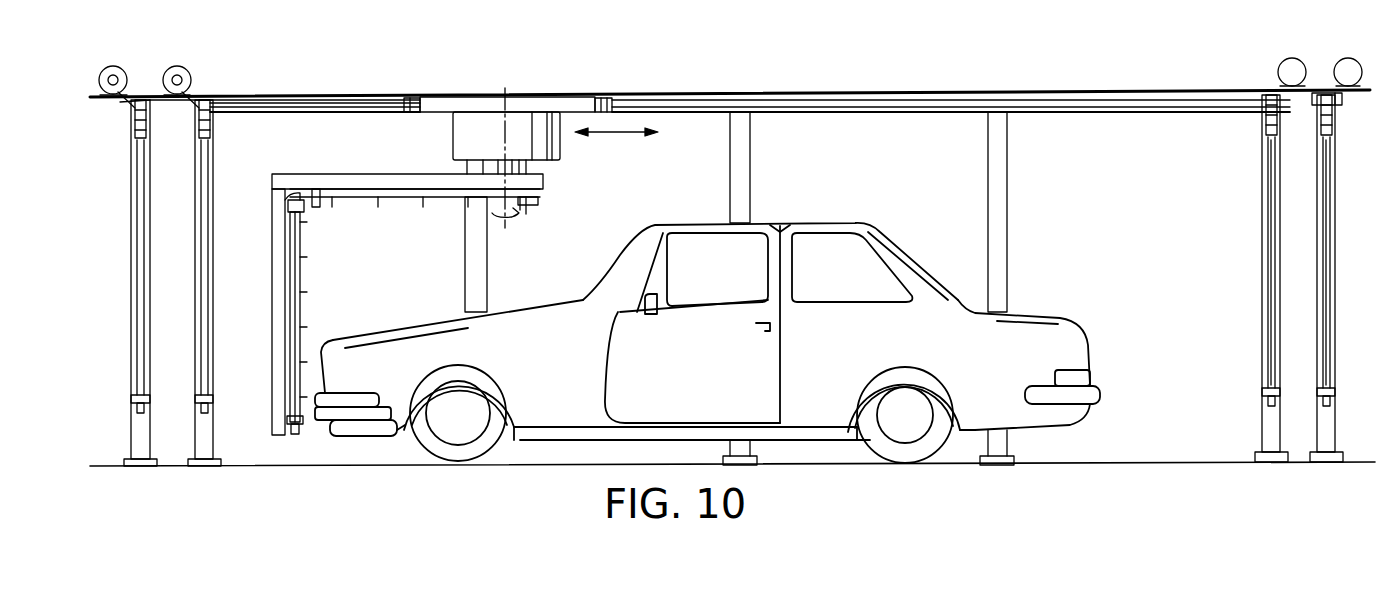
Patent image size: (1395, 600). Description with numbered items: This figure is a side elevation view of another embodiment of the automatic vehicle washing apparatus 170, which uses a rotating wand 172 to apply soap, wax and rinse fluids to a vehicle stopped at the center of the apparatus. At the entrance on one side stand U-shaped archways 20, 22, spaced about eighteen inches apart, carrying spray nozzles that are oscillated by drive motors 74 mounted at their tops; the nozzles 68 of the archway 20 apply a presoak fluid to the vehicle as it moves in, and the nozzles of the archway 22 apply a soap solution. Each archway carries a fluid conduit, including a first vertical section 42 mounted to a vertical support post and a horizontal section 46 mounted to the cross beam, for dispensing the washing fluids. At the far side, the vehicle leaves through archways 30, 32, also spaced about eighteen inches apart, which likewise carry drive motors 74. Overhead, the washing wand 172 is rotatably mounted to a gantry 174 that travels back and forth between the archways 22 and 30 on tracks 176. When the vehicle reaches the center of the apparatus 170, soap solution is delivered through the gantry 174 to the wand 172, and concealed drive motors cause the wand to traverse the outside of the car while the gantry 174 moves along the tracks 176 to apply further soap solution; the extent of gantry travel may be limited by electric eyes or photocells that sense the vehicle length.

The archway 20 is at (1333, 333).
The archway 22 is at (1263, 310).
The archway 30 is at (209, 308).
The archway 32 is at (131, 318).
The first vertical section 42 is at (131, 256).
The horizontal section 46 is at (1337, 112).
The nozzles 68 is at (1268, 186).
The drive motors 74 is at (172, 66).
The automatic vehicle washing apparatus 170 is at (926, 84).
The rotating wand 172 is at (365, 173).
The overhead gantry 174 is at (563, 95).
The tracks 176 is at (342, 97).